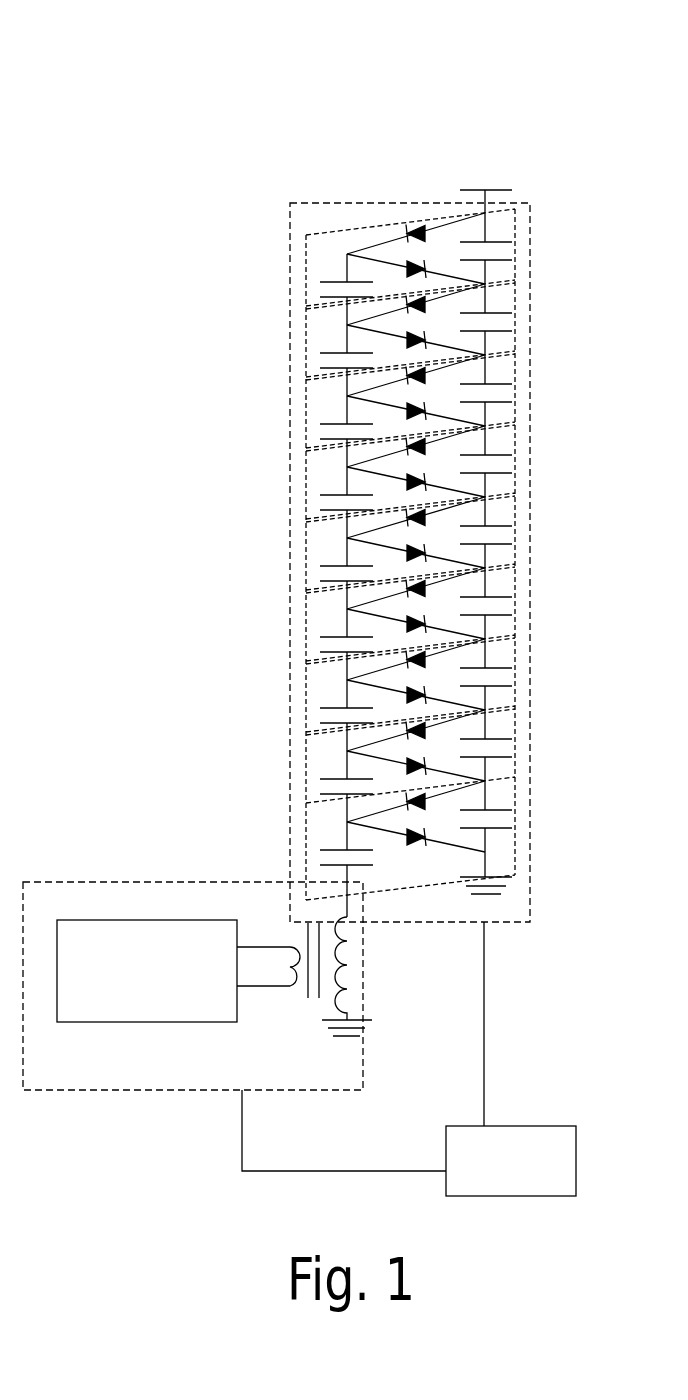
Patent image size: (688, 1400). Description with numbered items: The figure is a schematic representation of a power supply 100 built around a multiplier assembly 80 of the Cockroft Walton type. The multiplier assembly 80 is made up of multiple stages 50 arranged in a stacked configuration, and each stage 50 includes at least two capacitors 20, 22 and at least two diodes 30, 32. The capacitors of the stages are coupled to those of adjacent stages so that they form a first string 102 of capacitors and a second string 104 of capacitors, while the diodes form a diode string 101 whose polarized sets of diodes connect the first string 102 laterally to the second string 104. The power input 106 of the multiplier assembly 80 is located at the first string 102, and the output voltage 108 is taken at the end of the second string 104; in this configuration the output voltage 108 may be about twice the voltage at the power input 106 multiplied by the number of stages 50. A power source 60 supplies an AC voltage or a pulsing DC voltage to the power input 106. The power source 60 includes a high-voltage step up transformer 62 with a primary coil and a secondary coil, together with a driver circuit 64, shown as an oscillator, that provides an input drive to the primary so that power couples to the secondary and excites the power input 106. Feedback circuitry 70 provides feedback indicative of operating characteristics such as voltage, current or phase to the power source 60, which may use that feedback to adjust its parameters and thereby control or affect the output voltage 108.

The power supply 100 is at (392, 97).
The output voltage 108 is at (485, 172).
The second string of capacitors 104 is at (497, 268).
The first string of capacitors 102 is at (327, 255).
The diode string 101 is at (373, 687).
The power input 106 is at (360, 903).
The stage 50 is at (515, 237).
The capacitor 22 is at (503, 815).
The capacitor 20 is at (315, 849).
The diode 30 is at (409, 827).
The diode 32 is at (405, 805).
The multiplier assembly 80 is at (530, 887).
The power source 60 is at (197, 1091).
The high-voltage step up transformer 62 is at (326, 1003).
The driver circuit 64 is at (125, 918).
The feedback circuitry 70 is at (576, 1153).